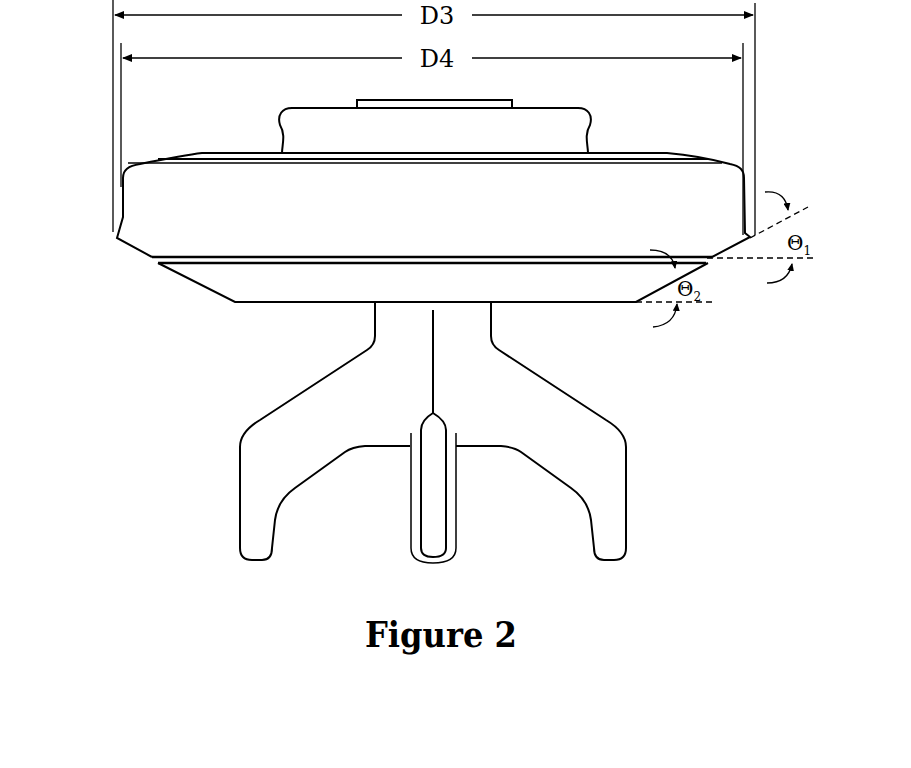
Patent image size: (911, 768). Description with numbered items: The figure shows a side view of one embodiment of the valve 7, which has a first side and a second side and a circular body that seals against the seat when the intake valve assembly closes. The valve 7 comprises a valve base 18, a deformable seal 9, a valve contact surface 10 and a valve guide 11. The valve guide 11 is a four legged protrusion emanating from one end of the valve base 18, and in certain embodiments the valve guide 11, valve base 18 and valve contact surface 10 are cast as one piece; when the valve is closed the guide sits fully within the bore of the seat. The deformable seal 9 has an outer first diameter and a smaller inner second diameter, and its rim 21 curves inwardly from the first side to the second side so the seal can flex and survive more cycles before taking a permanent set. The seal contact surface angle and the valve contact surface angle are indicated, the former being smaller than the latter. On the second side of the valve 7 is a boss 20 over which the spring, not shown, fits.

The valve 7 is at (784, 104).
The deformable seal 9 is at (195, 217).
The valve contact surface 10 is at (252, 280).
The valve guide 11 is at (613, 518).
The valve base 18 is at (232, 162).
The boss 20 is at (572, 118).
The rim 21 is at (130, 208).